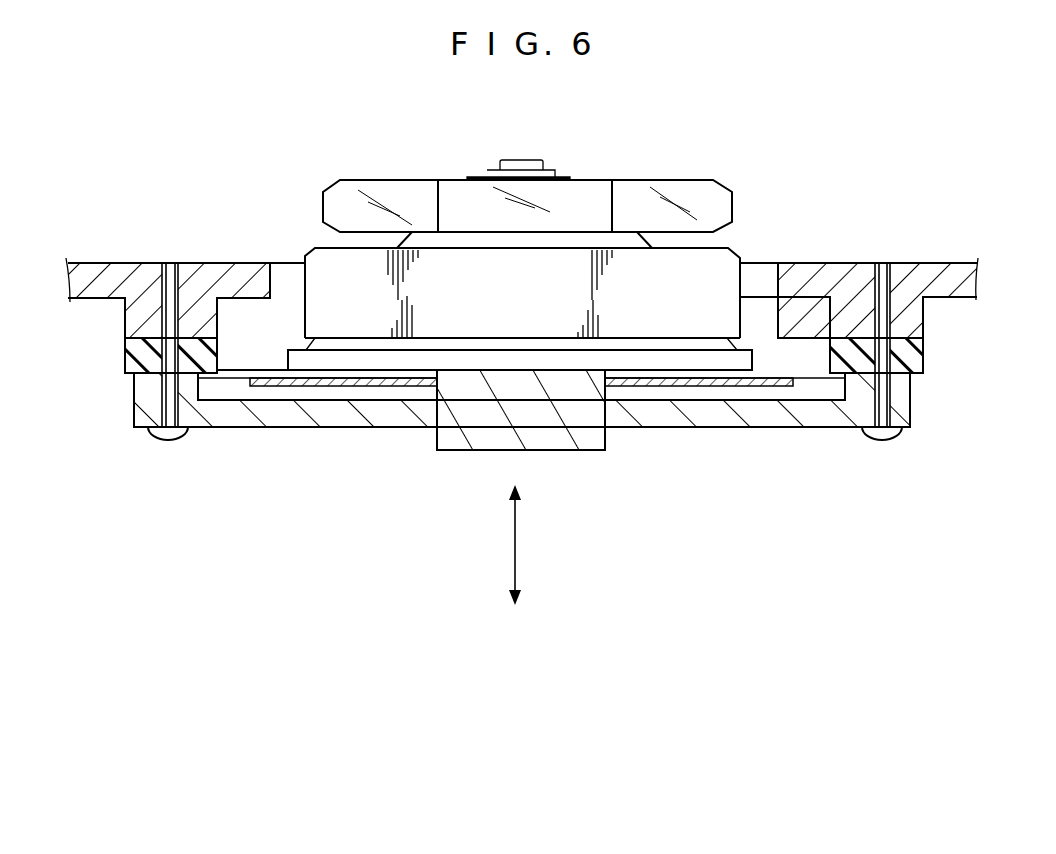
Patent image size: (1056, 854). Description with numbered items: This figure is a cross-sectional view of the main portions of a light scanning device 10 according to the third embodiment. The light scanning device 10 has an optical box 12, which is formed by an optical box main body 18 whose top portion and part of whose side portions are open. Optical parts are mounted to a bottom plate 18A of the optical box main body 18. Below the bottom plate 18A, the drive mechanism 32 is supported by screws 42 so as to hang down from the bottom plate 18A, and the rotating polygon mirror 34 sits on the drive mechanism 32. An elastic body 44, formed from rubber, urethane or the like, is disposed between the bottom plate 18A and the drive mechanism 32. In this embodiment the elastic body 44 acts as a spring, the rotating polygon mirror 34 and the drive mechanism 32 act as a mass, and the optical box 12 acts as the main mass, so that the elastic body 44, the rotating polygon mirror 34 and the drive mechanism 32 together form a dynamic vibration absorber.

The light scanning device 10 is at (816, 124).
The optical box 12 is at (980, 276).
The optical box main body 18 is at (938, 258).
The bottom plate 18A is at (813, 263).
The drive mechanism 32 is at (592, 458).
The rotating polygon mirror 34 is at (667, 180).
The screws 42 is at (173, 441).
The elastic body 44 is at (127, 352).